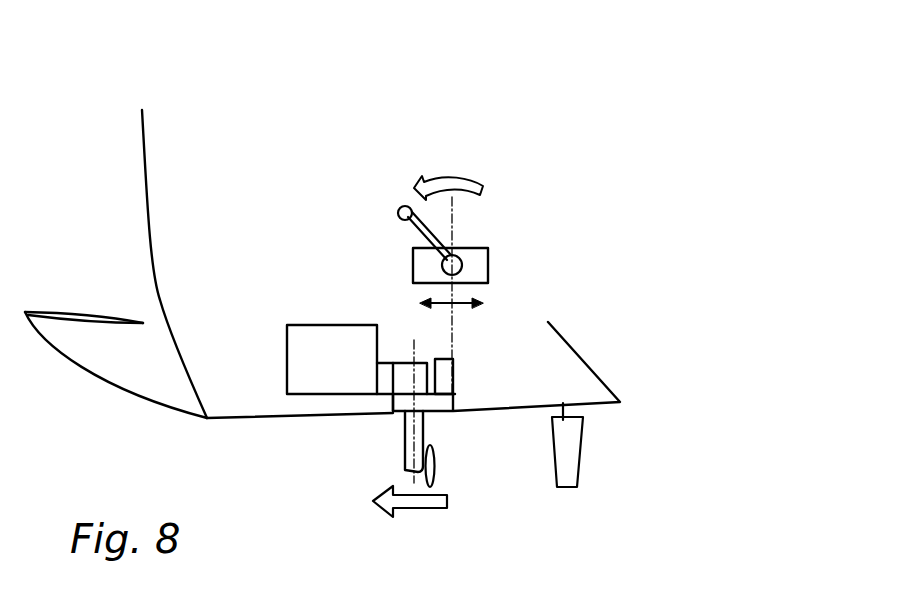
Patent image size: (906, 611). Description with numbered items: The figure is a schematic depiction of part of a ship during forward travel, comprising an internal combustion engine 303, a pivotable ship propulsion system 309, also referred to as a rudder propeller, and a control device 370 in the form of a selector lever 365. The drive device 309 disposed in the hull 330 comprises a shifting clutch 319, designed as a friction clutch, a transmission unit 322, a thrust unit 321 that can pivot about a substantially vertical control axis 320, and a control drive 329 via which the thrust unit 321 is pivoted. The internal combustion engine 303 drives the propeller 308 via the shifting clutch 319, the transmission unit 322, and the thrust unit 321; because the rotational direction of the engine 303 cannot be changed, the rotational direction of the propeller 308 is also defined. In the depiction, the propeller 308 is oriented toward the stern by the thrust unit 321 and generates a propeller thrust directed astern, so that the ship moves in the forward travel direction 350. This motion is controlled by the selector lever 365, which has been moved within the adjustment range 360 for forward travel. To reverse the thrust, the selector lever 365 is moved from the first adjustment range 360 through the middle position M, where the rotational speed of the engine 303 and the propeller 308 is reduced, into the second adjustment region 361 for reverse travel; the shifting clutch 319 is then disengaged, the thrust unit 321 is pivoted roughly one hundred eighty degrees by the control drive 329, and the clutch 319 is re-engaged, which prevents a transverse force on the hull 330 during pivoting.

The hull 330 is at (209, 237).
The internal combustion engine 303 is at (315, 363).
The shifting clutch 319 is at (382, 378).
The transmission unit 322 is at (420, 378).
The control drive 329 is at (446, 387).
The control axis 320 is at (415, 340).
The thrust unit 321 is at (418, 435).
The propeller 308 is at (432, 472).
The forward travel direction 350 is at (430, 503).
The pivotable ship propulsion system 309 is at (405, 340).
The adjustment range 360 is at (442, 303).
The selector lever 365 is at (412, 207).
The middle position M is at (455, 213).
The control device 370 is at (485, 240).
The adjustment region 361 is at (462, 305).